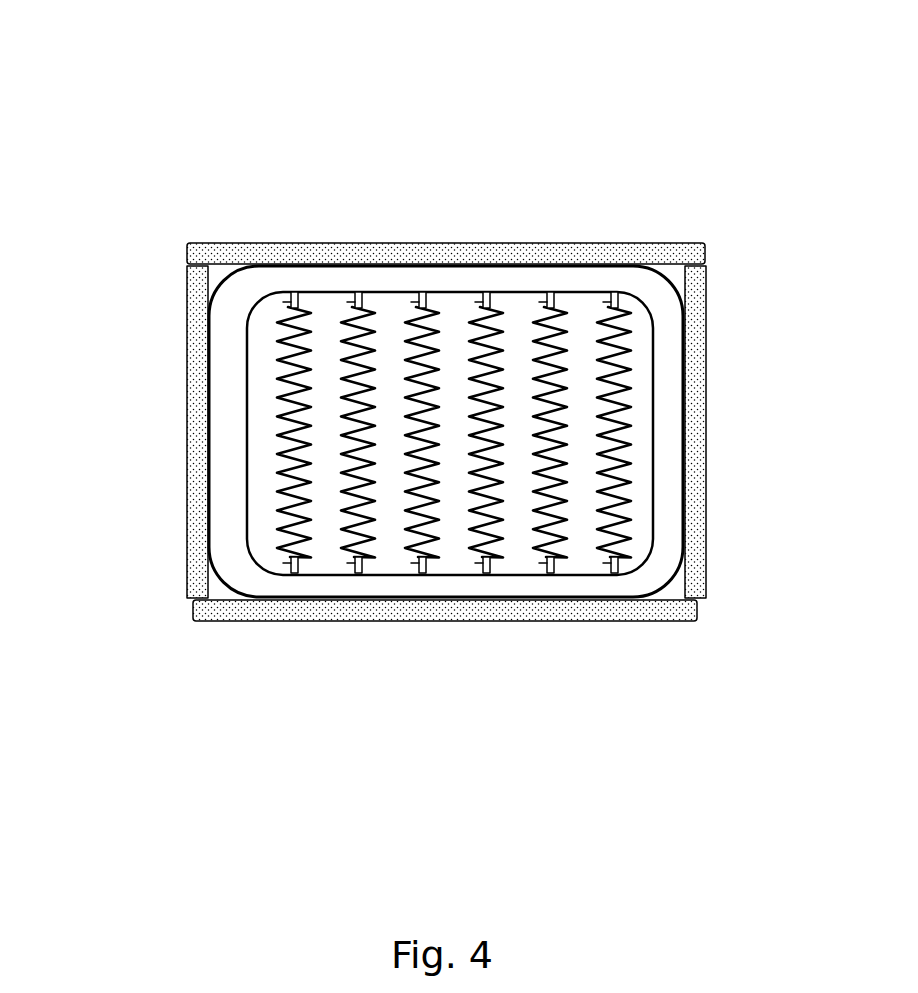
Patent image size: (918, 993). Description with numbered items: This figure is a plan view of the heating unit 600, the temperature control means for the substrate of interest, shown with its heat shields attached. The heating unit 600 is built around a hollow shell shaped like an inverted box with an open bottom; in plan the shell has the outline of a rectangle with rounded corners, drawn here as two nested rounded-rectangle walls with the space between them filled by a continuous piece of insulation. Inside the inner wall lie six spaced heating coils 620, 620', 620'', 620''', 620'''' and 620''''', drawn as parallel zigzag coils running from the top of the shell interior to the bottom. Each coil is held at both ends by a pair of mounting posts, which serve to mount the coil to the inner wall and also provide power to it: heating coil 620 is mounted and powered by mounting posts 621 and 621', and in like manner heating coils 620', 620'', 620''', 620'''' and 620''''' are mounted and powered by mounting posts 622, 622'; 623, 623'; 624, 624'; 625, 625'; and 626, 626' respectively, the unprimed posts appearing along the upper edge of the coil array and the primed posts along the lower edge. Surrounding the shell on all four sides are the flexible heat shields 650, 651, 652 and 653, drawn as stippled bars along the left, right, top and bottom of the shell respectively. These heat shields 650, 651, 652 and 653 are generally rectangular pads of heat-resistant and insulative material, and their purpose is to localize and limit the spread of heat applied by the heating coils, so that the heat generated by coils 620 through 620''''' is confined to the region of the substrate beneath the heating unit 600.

The heating unit 600 is at (128, 498).
The heating coil 620 is at (290, 340).
The heating coil 620' is at (399, 322).
The heating coil 620'' is at (514, 322).
The heating coil 620''' is at (394, 554).
The heating coil 620'''' is at (498, 563).
The heating coil 620''''' is at (632, 563).
The mounting post 621 is at (170, 227).
The mounting post 622 is at (357, 169).
The mounting post 623 is at (487, 155).
The mounting post 624 is at (617, 191).
The mounting post 625 is at (687, 216).
The mounting post 626 is at (728, 270).
The mounting post 621' is at (169, 602).
The mounting post 622' is at (261, 625).
The mounting post 623' is at (302, 655).
The mounting post 624' is at (426, 645).
The mounting post 625' is at (527, 651).
The mounting post 626' is at (716, 530).
The flexible heat shield 650 is at (196, 345).
The flexible heat shield 651 is at (700, 400).
The flexible heat shield 652 is at (258, 243).
The flexible heat shield 653 is at (657, 613).